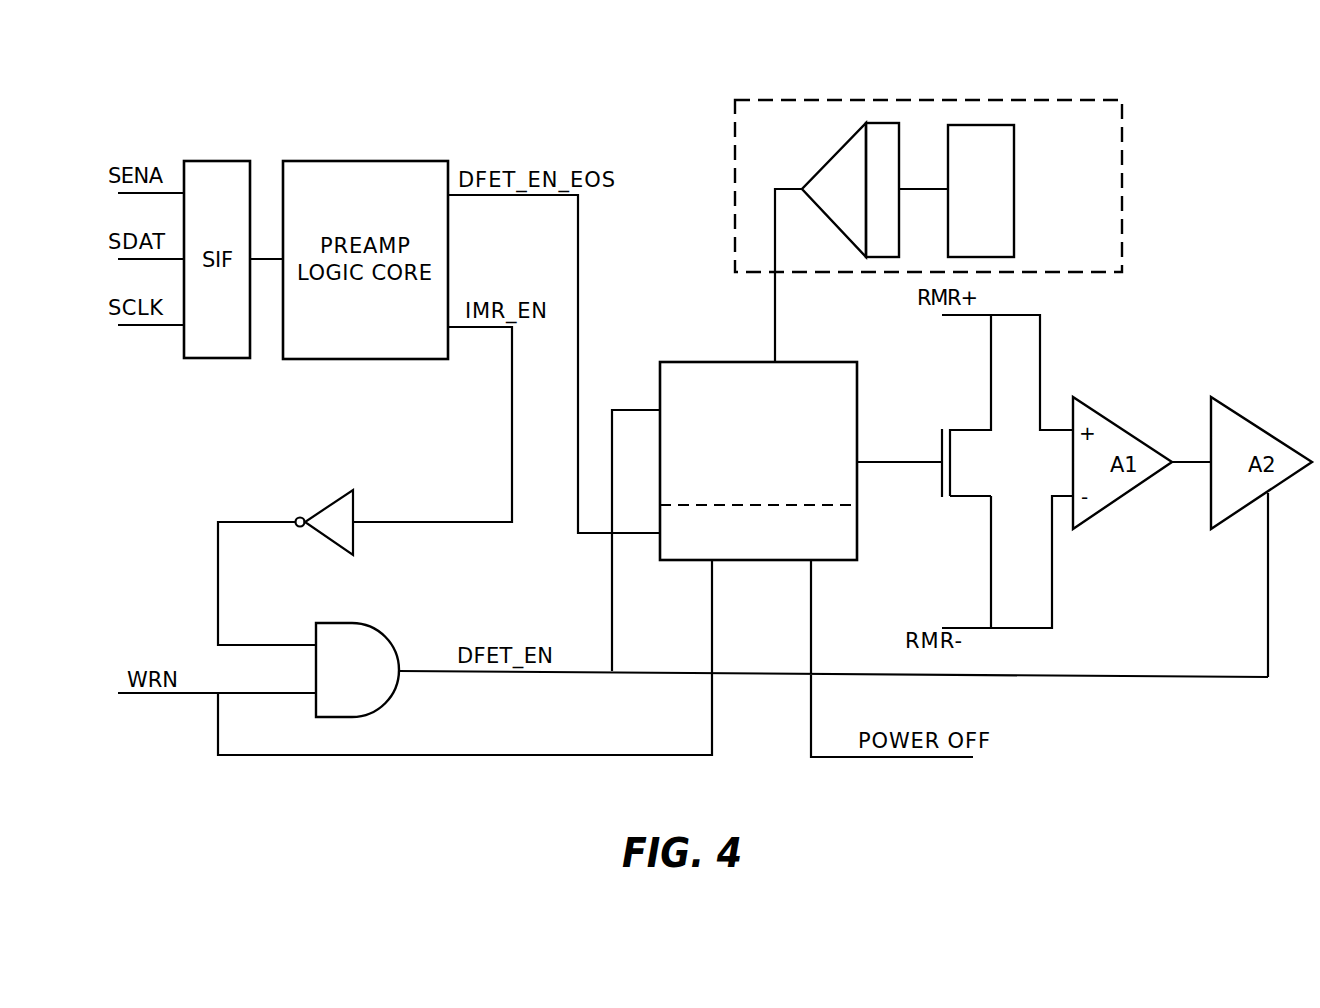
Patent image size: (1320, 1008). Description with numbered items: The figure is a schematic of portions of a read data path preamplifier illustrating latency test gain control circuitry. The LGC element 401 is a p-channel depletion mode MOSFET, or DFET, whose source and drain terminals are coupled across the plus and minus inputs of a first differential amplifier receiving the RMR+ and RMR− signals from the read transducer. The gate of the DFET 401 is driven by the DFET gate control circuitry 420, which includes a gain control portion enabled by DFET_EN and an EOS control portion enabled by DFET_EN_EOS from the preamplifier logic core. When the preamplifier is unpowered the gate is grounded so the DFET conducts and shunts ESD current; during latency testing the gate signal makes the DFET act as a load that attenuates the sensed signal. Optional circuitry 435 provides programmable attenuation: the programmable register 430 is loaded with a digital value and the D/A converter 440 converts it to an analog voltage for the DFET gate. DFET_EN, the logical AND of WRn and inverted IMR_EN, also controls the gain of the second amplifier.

The LGC element (DFET) 401 is at (980, 428).
The DFET gate control circuitry 420 is at (800, 360).
The programmable register 430 is at (1005, 150).
The optional circuitry for programmable attenuation 435 is at (1122, 180).
The D/A converter 440 is at (842, 162).